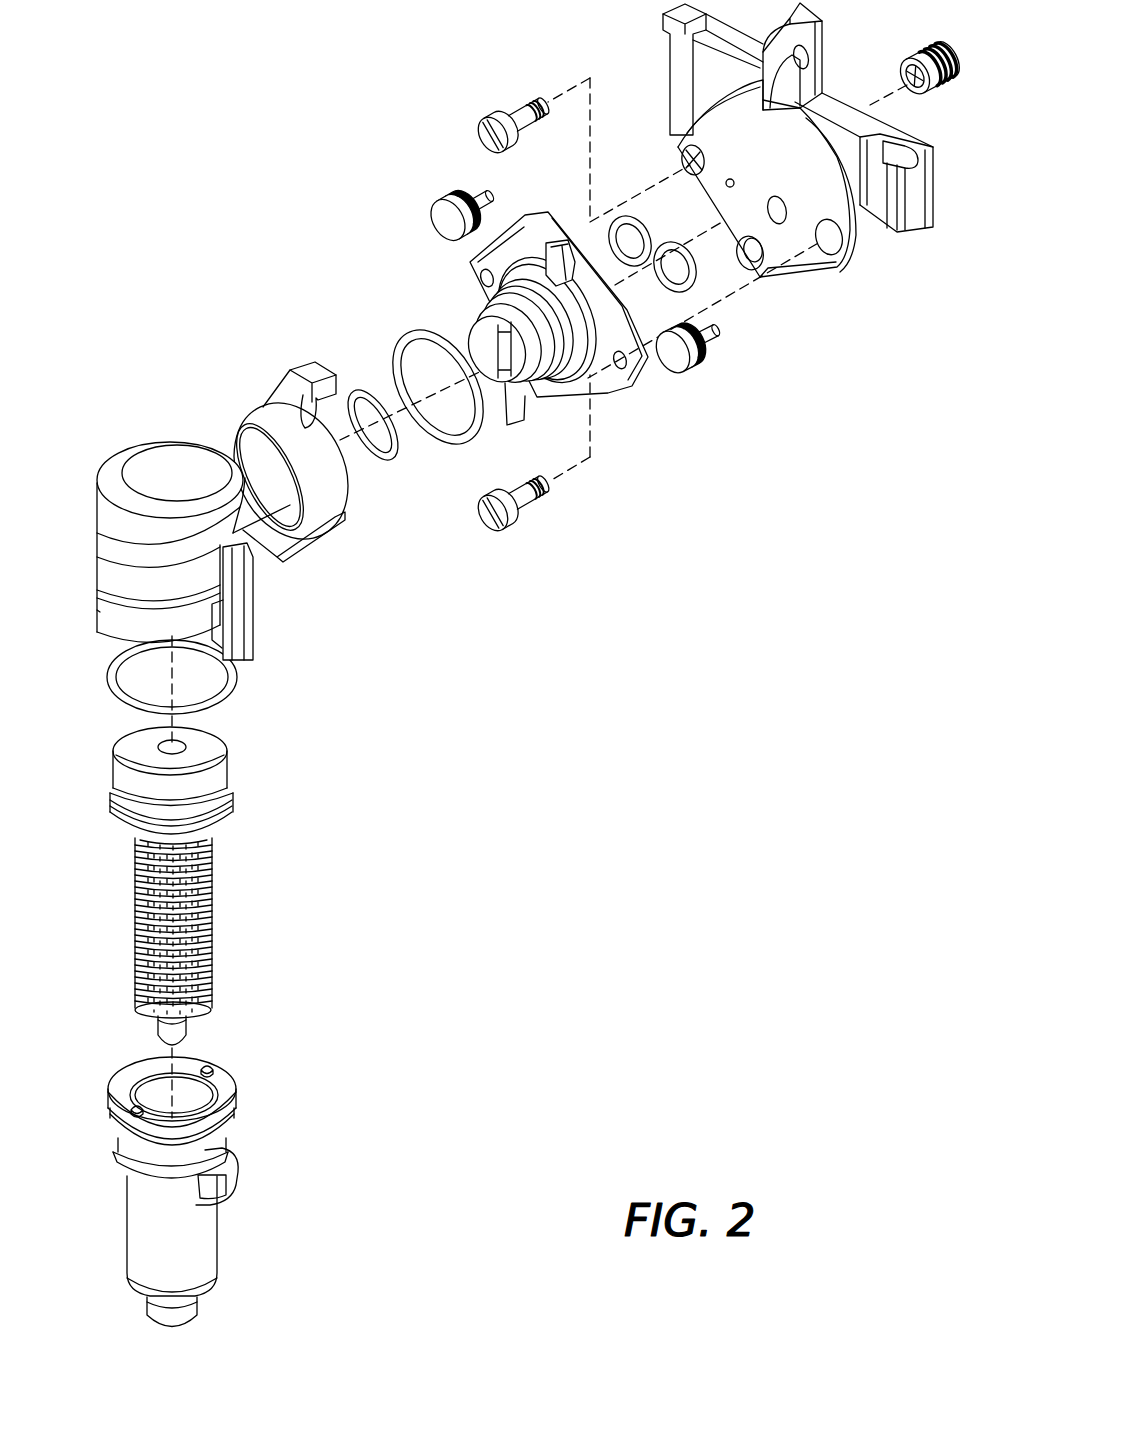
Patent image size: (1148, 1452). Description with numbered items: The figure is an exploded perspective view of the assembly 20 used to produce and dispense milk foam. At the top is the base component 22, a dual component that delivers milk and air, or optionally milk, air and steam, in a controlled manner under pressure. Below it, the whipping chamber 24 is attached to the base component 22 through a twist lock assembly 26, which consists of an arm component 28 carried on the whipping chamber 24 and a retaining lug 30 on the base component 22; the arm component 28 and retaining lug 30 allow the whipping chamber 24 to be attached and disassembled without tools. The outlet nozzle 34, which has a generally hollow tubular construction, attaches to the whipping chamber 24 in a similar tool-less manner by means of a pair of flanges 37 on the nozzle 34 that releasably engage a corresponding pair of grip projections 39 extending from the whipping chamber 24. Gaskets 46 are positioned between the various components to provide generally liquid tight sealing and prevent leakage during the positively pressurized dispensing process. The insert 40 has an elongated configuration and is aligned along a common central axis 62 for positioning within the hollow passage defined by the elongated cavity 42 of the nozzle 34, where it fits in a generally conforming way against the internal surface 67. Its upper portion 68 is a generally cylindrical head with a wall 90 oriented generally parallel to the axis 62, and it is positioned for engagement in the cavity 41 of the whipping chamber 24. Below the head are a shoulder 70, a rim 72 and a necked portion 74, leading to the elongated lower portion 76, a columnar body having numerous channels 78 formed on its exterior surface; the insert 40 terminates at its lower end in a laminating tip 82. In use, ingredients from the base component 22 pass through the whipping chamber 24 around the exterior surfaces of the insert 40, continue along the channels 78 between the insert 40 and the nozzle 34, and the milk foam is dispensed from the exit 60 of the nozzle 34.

The assembly 20 is at (204, 463).
The base component 22 is at (432, 248).
The whipping chamber 24 is at (112, 488).
The twist lock assembly 26 is at (483, 297).
The arm component 28 is at (305, 385).
The retaining lug 30 is at (556, 262).
The outlet nozzle 34 is at (183, 1185).
The flanges 37 is at (235, 1172).
The grip projections 39 is at (255, 660).
The insert 40 is at (174, 877).
The cavity 41 is at (100, 614).
The elongated cavity 42 is at (152, 1085).
The gaskets 46 is at (452, 442).
The exit 60 is at (185, 1333).
The central axis 62 is at (175, 1096).
The internal surface 67 is at (188, 1106).
The upper portion 68 is at (174, 777).
The shoulder 70 is at (117, 792).
The rim 72 is at (222, 818).
The necked portion 74 is at (128, 838).
The elongated lower portion 76 is at (185, 950).
The channels 78 is at (135, 905).
The laminating tip 82 is at (188, 1023).
The wall 90 is at (215, 785).